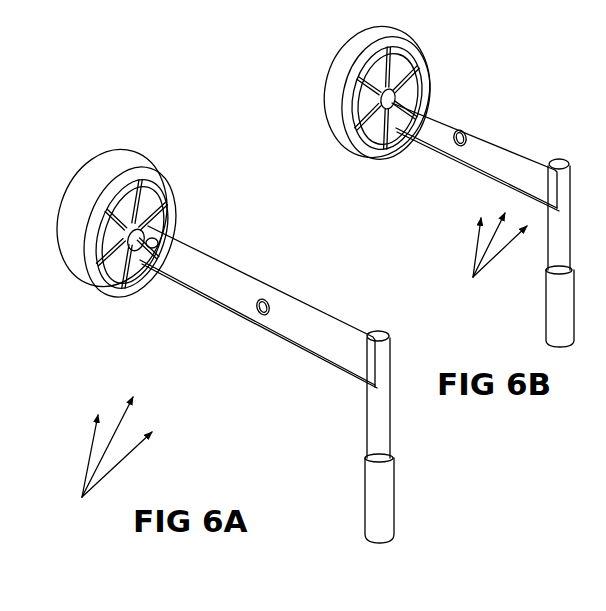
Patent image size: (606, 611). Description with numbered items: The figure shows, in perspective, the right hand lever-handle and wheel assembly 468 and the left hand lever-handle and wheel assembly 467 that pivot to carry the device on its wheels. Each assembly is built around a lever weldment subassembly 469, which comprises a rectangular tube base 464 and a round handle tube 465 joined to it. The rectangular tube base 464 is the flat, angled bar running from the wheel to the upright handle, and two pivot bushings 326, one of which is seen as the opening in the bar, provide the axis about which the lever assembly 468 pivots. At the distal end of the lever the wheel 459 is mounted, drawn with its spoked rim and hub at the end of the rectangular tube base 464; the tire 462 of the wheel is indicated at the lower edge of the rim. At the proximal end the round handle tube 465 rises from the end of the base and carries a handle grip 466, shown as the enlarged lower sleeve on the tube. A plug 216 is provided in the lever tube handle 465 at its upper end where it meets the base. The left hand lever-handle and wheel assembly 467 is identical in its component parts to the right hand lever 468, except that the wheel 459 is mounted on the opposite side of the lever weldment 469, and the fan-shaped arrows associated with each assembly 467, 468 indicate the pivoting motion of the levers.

In FIG. 6A, the wheel 459 is at (143, 247).
In FIG. 6B, the wheel 459 is at (333, 73).
In FIG. 6A, the tire 462 is at (113, 297).
In FIG. 6A, the pivot bushing 326 is at (250, 312).
In FIG. 6A, the rectangular tube base 464 is at (248, 329).
In FIG. 6A, the plug 216 is at (377, 329).
In FIG. 6A, the lever weldment subassembly 469 is at (257, 391).
In FIG. 6A, the round handle tube 465 is at (365, 436).
In FIG. 6A, the handle grip 466 is at (364, 508).
In FIG. 6A, the left hand lever-handle and wheel assembly 467 is at (82, 497).
In FIG. 6B, the right hand lever-handle and wheel assembly 468 is at (473, 277).